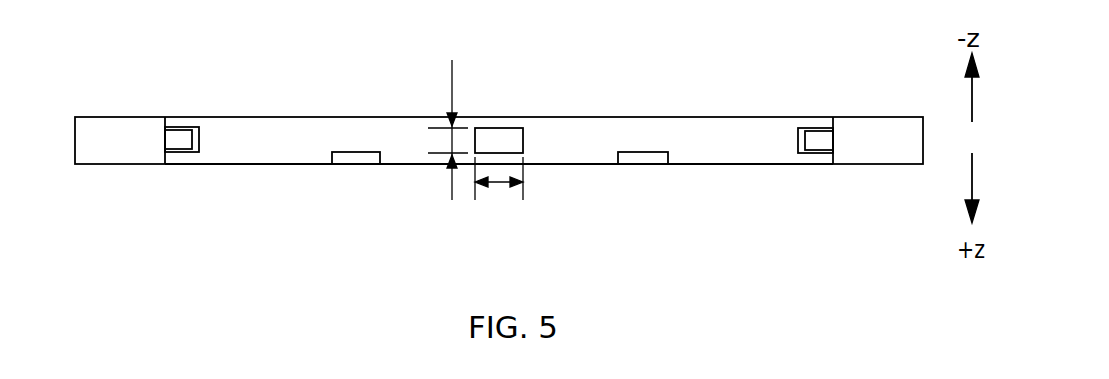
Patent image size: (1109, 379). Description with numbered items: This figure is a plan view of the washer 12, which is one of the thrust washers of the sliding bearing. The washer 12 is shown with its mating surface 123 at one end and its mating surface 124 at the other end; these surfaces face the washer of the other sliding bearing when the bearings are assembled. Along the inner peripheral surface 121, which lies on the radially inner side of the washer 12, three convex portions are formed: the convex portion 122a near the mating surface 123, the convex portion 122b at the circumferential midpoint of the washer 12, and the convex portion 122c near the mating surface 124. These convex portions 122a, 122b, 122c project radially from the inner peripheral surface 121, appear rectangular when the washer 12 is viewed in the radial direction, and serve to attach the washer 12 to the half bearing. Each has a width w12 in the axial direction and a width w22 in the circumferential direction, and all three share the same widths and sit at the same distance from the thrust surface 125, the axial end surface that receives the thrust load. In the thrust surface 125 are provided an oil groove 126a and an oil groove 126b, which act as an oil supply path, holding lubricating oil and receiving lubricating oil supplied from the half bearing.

The washer 12 is at (685, 60).
The inner peripheral surface 121 is at (741, 155).
The convex portion 122a is at (185, 131).
The convex portion 122b is at (500, 135).
The convex portion 122c is at (815, 130).
The mating surface 123 is at (119, 128).
The mating surface 124 is at (877, 128).
The thrust surface 125 is at (218, 166).
The oil groove 126a is at (355, 153).
The oil groove 126b is at (640, 153).
The width in the axial direction w12 is at (428, 130).
The width in the circumferential direction w22 is at (498, 192).